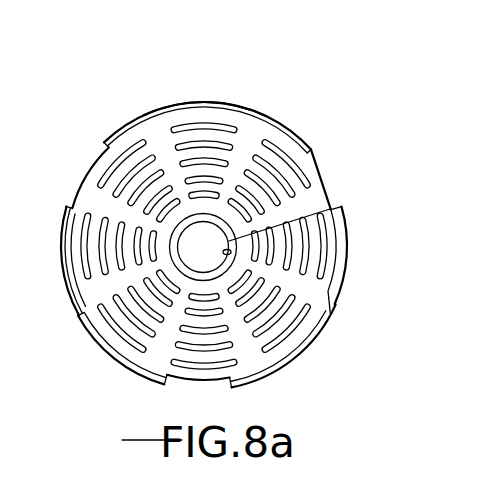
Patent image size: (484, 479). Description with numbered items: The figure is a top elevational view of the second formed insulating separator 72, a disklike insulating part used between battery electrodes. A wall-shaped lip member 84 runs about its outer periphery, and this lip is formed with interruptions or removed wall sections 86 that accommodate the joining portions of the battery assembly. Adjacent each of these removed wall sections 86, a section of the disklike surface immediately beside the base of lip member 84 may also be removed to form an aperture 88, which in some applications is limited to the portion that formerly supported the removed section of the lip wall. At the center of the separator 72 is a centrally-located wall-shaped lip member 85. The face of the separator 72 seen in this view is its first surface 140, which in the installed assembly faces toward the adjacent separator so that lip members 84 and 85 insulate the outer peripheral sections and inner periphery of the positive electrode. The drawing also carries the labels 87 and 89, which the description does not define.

The insulating separator 72 is at (210, 238).
The wall-shaped lip member 84 is at (236, 108).
The centrally-located wall-shaped lip member 85 is at (330, 209).
The interruptions or removed wall sections 86 is at (97, 165).
The tab 87 is at (83, 185).
The aperture 88 is at (190, 102).
The central hub 89 is at (233, 250).
The first surface 140 is at (258, 140).